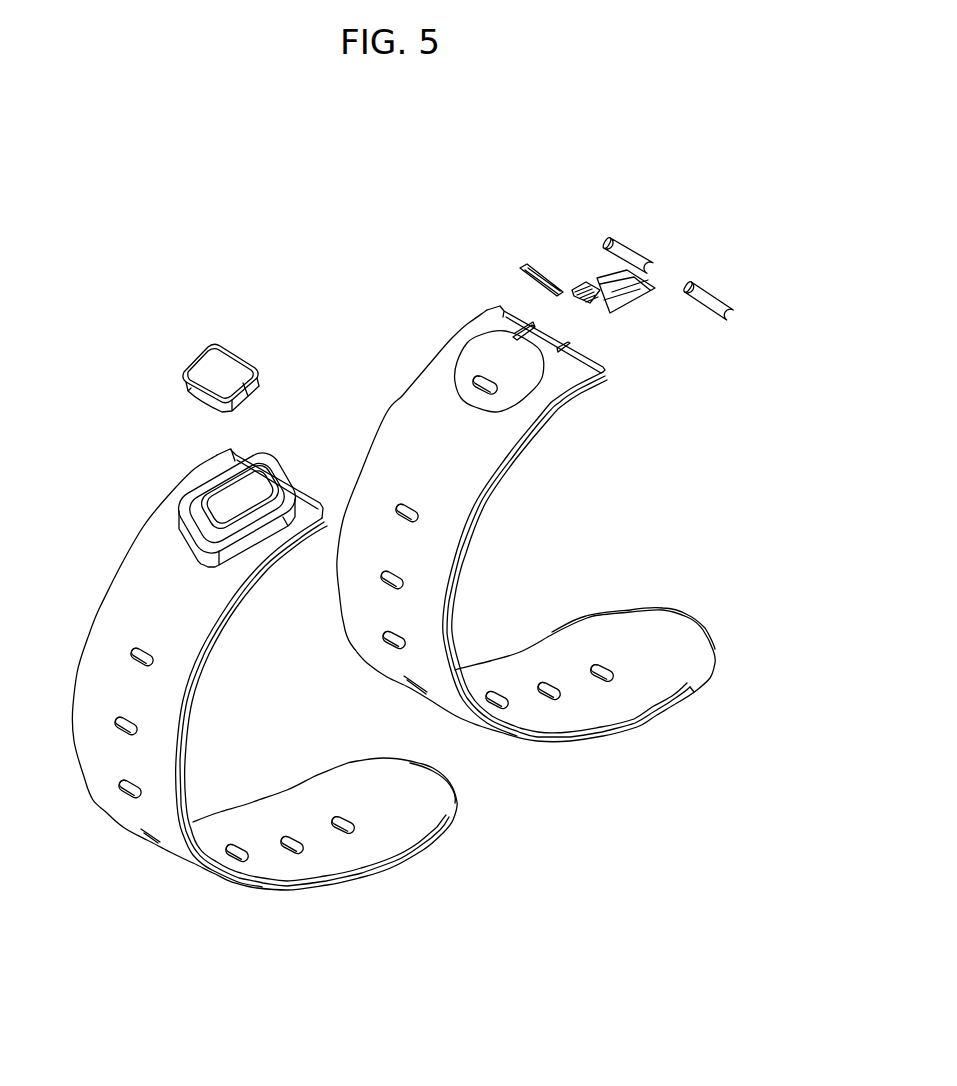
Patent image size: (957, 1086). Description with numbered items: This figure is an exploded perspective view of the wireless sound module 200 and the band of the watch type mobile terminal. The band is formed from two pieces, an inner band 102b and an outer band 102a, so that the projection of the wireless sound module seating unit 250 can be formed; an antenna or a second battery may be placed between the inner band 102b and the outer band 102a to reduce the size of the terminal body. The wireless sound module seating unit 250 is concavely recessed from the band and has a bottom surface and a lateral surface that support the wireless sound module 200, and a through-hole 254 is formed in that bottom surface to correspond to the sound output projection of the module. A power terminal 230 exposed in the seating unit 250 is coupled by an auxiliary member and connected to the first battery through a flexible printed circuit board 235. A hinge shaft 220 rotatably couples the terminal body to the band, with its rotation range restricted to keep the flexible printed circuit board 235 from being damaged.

The outer band 102a is at (264, 688).
The inner band 102b is at (526, 524).
The wireless sound module 200 is at (209, 356).
The hinge shaft 220 is at (642, 260).
The power terminal 230 is at (583, 280).
The flexible printed circuit board 235 is at (618, 270).
The wireless sound module seating unit 250 is at (221, 510).
The through-hole 254 is at (498, 395).